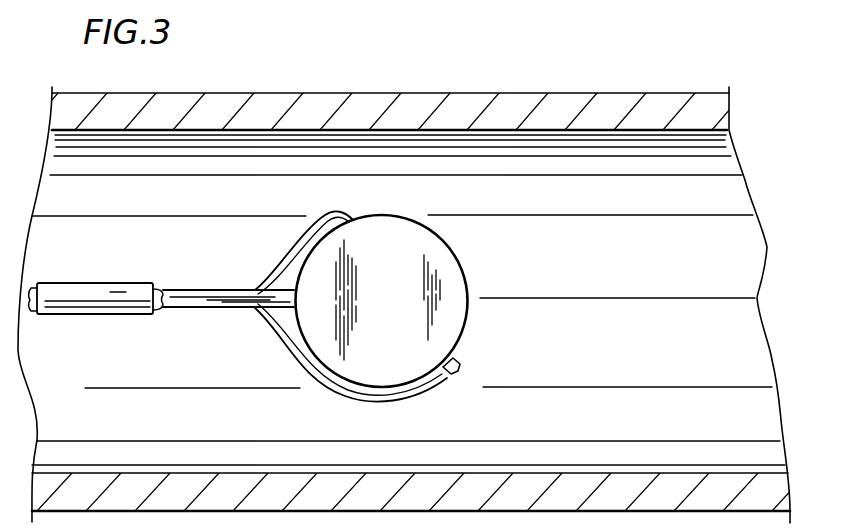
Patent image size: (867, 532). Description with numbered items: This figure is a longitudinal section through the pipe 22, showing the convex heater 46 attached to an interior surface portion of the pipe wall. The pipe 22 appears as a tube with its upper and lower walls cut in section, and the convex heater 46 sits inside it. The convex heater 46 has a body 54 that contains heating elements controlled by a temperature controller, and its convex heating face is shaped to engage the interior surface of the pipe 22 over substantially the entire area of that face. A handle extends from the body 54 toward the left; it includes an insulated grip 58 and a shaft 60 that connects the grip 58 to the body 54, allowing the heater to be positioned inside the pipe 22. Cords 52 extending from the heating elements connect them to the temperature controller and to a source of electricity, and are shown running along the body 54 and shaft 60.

The pipe 22 is at (612, 93).
The convex heater 46 is at (489, 265).
The cords 52 is at (293, 241).
The body 54 is at (456, 313).
The insulated grip 58 is at (70, 283).
The shaft 60 is at (210, 311).